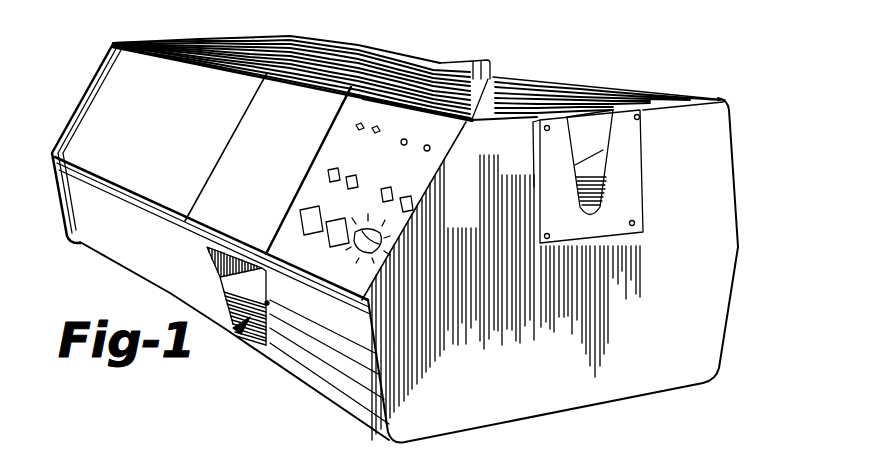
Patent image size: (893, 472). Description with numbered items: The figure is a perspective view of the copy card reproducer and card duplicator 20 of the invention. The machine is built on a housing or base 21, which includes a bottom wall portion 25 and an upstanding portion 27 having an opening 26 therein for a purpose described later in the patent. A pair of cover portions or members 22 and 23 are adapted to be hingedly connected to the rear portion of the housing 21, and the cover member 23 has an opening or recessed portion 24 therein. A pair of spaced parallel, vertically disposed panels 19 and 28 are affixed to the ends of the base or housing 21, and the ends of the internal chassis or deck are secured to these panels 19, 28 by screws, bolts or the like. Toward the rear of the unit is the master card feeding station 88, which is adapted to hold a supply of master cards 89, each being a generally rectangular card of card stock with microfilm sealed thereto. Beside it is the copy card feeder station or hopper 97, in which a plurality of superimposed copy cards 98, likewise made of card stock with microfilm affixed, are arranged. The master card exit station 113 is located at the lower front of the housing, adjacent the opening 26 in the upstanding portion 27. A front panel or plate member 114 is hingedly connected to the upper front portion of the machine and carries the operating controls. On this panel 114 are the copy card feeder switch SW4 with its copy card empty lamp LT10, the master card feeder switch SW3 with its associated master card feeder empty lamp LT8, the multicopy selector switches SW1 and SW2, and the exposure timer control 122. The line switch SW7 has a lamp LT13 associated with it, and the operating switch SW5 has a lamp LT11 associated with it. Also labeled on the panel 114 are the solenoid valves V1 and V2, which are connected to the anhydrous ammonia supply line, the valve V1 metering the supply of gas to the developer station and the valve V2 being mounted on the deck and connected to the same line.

The panel 19 is at (148, 43).
The reproducer and card duplicator 20 is at (744, 166).
The housing or base 21 is at (348, 410).
The cover portion or member 22 is at (360, 43).
The cover portion or member 23 is at (412, 74).
The opening or recessed portion 24 is at (505, 70).
The bottom wall portion 25 is at (300, 362).
The opening 26 is at (254, 297).
The upstanding portion 27 is at (330, 373).
The panel 28 is at (642, 326).
The master card feeding station 88 is at (549, 70).
The master cards 89 is at (254, 342).
The copy card feeder station or hopper 97 is at (574, 107).
The copy cards 98 is at (595, 183).
The master card exit station 113 is at (238, 331).
The front panel or plate member 114 is at (414, 183).
The exposure timer control 122 is at (403, 246).
The master card feeder "empty" lamp LT8 is at (357, 125).
The copy card "empty" lamp LT10 is at (373, 127).
The lamp LT11 is at (407, 141).
The lamp LT13 is at (431, 147).
The multicopy selector SW1 is at (299, 216).
The multicopy selector SW2 is at (300, 226).
The master card feeder switch SW3 is at (328, 174).
The copy card feeder switch SW4 is at (356, 172).
The operating switch SW5 is at (400, 170).
The line switch SW7 is at (459, 216).
The solenoid valve V1 is at (338, 228).
The solenoid valve V2 is at (346, 246).